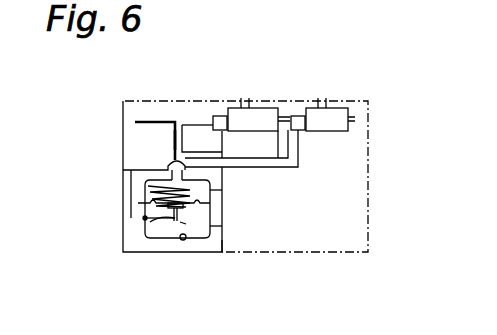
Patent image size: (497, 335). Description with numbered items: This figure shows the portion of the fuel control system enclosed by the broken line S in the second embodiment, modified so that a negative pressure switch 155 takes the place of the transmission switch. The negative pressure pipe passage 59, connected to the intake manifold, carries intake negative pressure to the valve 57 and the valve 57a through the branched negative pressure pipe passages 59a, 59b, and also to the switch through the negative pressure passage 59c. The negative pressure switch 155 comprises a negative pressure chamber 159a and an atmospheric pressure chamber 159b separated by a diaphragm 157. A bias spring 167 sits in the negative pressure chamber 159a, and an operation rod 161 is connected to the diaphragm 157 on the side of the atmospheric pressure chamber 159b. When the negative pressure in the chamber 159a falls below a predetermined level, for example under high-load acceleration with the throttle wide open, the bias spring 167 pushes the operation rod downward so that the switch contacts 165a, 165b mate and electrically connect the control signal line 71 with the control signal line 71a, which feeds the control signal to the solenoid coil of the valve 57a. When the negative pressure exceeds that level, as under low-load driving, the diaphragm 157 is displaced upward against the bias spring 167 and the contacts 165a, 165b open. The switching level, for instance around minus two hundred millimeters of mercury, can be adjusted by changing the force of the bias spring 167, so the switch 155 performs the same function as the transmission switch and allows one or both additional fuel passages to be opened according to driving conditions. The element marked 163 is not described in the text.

The broken line S is at (327, 254).
The valve 57 is at (331, 107).
The valve 57a is at (238, 107).
The negative pressure pipe passage 59 is at (150, 118).
The branched negative pressure pipe passage 59a is at (283, 143).
The branched negative pressure pipe passage 59b is at (201, 121).
The negative pressure passage 59c is at (173, 133).
The control signal line 71 is at (118, 170).
The control signal line 71a is at (222, 243).
The negative pressure switch 155 is at (272, 221).
The diaphragm 157 is at (143, 218).
The negative pressure chamber 159a is at (211, 192).
The atmospheric pressure chamber 159b is at (212, 226).
The operation rod 161 is at (185, 214).
The valve chamber 163 is at (150, 222).
The switch contact 165a is at (182, 224).
The switch contact 165b is at (181, 240).
The bias spring 167 is at (150, 189).